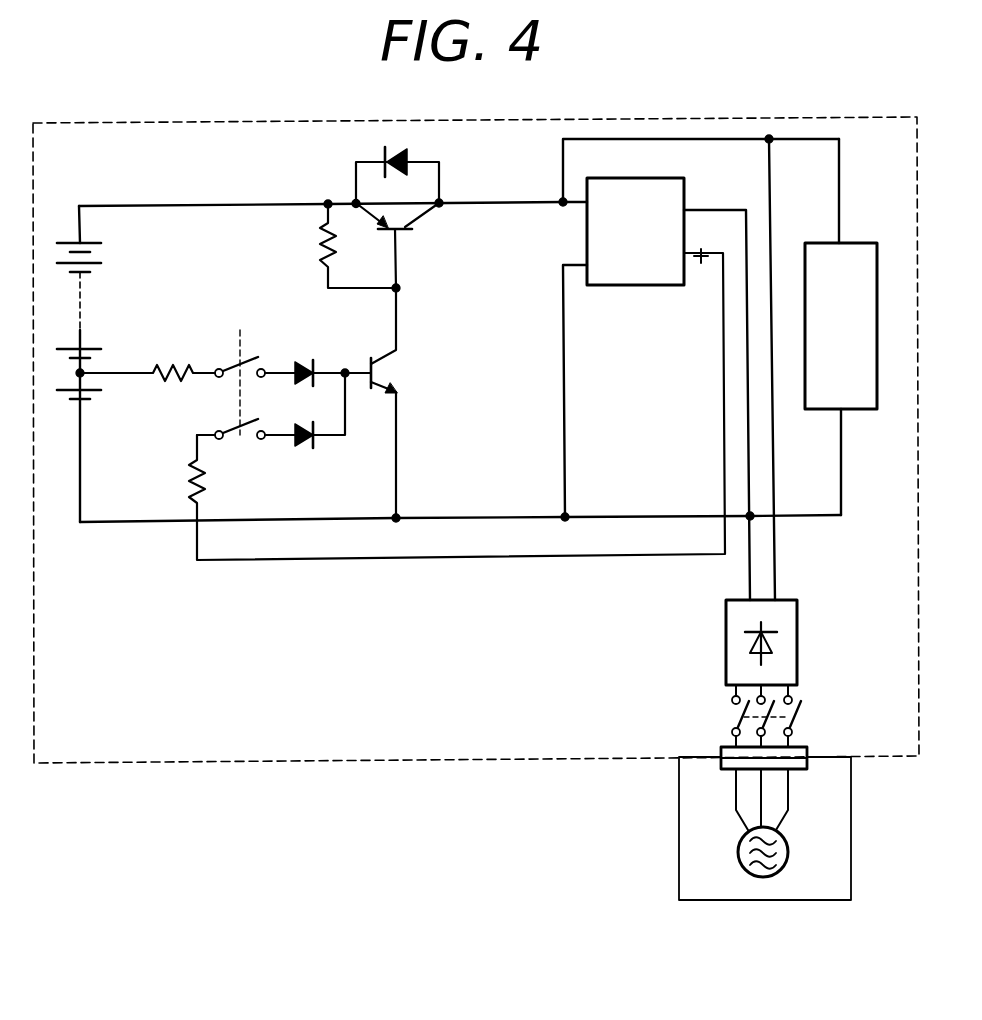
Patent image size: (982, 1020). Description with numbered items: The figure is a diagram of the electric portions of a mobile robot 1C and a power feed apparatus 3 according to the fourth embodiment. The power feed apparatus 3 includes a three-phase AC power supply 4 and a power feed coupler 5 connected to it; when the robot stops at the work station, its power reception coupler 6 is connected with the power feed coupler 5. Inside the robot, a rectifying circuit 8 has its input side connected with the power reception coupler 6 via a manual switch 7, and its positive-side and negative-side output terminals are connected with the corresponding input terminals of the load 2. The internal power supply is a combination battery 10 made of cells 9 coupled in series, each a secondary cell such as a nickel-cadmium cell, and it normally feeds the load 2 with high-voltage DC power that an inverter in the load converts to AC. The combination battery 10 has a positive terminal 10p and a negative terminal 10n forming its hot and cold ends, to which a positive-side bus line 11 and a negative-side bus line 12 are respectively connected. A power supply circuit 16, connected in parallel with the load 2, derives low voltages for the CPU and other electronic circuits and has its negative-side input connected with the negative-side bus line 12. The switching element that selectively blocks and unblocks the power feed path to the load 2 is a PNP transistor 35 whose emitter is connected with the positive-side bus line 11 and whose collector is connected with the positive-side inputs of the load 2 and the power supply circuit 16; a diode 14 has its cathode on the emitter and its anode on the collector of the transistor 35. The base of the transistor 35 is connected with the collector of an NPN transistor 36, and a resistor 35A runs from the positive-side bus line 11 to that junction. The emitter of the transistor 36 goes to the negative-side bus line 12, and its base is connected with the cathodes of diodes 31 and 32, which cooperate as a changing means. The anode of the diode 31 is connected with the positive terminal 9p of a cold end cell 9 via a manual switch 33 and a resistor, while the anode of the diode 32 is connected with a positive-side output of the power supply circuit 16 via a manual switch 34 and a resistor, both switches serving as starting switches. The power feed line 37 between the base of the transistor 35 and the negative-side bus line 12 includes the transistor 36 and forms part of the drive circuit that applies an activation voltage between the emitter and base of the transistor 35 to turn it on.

The mobile robot 1C is at (920, 183).
The load 2 is at (852, 243).
The power feed apparatus 3 is at (851, 790).
The three-phase AC power supply 4 is at (790, 848).
The power feed coupler 5 is at (720, 762).
The power reception coupler 6 is at (722, 752).
The manual switch 7 is at (800, 710).
The rectifying circuit 8 is at (798, 640).
The cell 9 is at (117, 425).
The positive terminal of cold end cell 9p is at (82, 372).
The combination battery 10 is at (132, 268).
The positive terminal 10p is at (82, 243).
The negative terminal 10n is at (82, 400).
The positive-side bus line 11 is at (292, 202).
The negative-side bus line 12 is at (482, 516).
The diode 14 is at (405, 161).
The power supply circuit 16 is at (650, 178).
The diode 31 is at (305, 356).
The diode 32 is at (305, 450).
The manual switch 33 is at (240, 342).
The manual switch 34 is at (243, 440).
The PNP transistor 35 is at (412, 218).
The resistor 35A is at (320, 245).
The NPN transistor 36 is at (385, 372).
The power feed line 37 is at (400, 322).